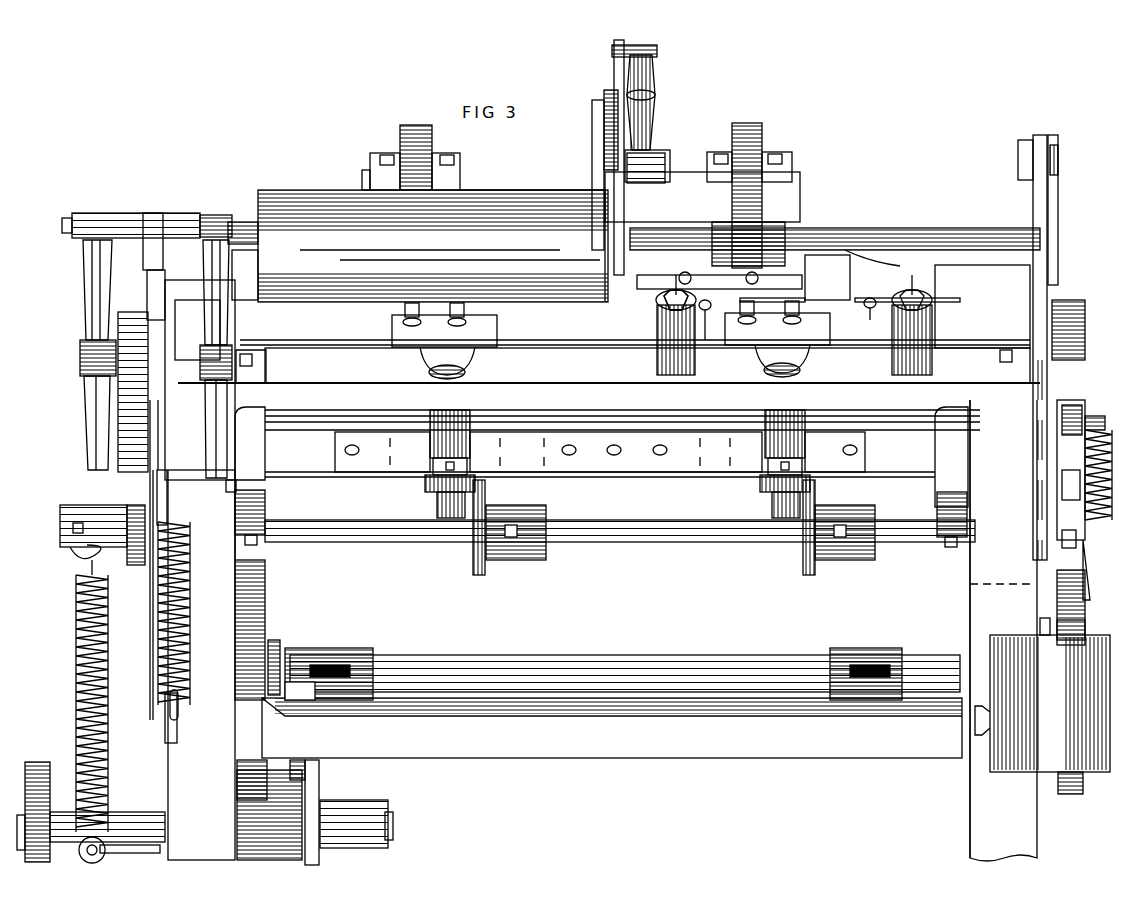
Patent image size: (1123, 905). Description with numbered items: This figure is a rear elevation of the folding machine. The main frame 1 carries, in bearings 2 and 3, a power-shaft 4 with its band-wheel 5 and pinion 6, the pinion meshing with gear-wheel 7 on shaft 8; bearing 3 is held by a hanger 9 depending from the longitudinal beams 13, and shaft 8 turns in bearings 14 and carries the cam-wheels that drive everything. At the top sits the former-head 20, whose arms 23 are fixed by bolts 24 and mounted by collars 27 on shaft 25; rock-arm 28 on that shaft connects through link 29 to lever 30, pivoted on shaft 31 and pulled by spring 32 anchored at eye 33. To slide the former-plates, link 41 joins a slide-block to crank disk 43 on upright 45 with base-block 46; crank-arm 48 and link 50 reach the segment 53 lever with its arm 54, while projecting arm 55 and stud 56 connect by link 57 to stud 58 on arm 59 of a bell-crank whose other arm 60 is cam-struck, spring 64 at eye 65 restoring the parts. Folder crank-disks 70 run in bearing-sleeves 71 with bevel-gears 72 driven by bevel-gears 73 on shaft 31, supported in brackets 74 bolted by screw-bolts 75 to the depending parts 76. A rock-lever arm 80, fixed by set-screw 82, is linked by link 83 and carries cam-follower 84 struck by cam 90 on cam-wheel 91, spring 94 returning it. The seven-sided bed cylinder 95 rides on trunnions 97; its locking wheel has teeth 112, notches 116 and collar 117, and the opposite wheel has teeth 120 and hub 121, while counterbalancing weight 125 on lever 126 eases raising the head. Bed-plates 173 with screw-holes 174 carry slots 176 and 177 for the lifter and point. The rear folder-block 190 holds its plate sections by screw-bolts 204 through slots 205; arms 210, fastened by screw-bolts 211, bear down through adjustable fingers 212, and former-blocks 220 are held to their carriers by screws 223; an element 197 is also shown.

The main frame 1 is at (176, 758).
The bearing 2 is at (136, 838).
The bearing 3 is at (368, 806).
The power-shaft 4 is at (65, 812).
The band-wheel 5 is at (36, 762).
The pinion 6 is at (270, 800).
The gear-wheel 7 is at (262, 607).
The shaft 8 is at (605, 660).
The hanger 9 is at (312, 782).
The longitudinal beams 13 is at (612, 728).
The bearings 14 is at (325, 656).
The former-head 20 is at (508, 188).
The arms 23 is at (416, 126).
The bolts 24 is at (387, 155).
The shaft 25 is at (895, 228).
The collars 27 is at (775, 225).
The rock-arm 28 is at (152, 214).
The link 29 is at (86, 400).
The lever 30 is at (136, 565).
The shaft 31 is at (368, 543).
The spring 32 is at (78, 640).
The eye 33 is at (80, 852).
The link 41 is at (595, 130).
The crank disk 43 is at (606, 100).
The upright 45 is at (628, 140).
The base-block 46 is at (660, 183).
The crank-arm 48 is at (612, 51).
The link 50 is at (652, 72).
The segment 53 is at (433, 246).
The arm 54 is at (606, 202).
The projecting arm 55 is at (252, 240).
The stud 56 is at (210, 218).
The link 57 is at (207, 405).
The stud 58 is at (234, 486).
The arm 59 is at (163, 478).
The lever-arm 60 is at (152, 620).
The spring 64 is at (192, 668).
The eye 65 is at (180, 718).
The crank-disks 70 is at (470, 371).
The bearing-sleeves 71 is at (470, 415).
The bevel-gear 72 is at (425, 484).
The bevel-gears 73 is at (472, 556).
The brackets 74 is at (265, 516).
The screw-bolts 75 is at (258, 541).
The depending parts 76 is at (601, 457).
The arm 80 is at (1082, 500).
The set-screw 82 is at (1085, 565).
The link 83 is at (1095, 428).
The cam-follower 84 is at (1074, 548).
The cam 90 is at (1060, 575).
The cam-wheel 91 is at (1062, 592).
The spring 94 is at (1060, 480).
The multiple bed cylinder 95 is at (330, 481).
The trunnions 97 is at (298, 403).
The teeth 112 is at (150, 305).
The notch 116 is at (192, 436).
The collar 117 is at (118, 322).
The teeth 120 is at (1035, 398).
The hub 121 is at (1070, 302).
The counterbalancing weight 125 is at (1095, 770).
The lever 126 is at (1040, 138).
The bed-plates 173 is at (341, 440).
The screw-holes 174 is at (569, 456).
The slot 176 is at (616, 444).
The slot 177 is at (615, 462).
The folder-block 190 is at (338, 334).
The block 197 is at (845, 285).
The screw-bolts 204 is at (706, 345).
The slots 205 is at (772, 306).
The arms 210 is at (656, 320).
The screw-bolts 211 is at (656, 336).
The adjustable finger 212 is at (665, 300).
The former-blocks 220 is at (757, 281).
The screws 223 is at (772, 268).